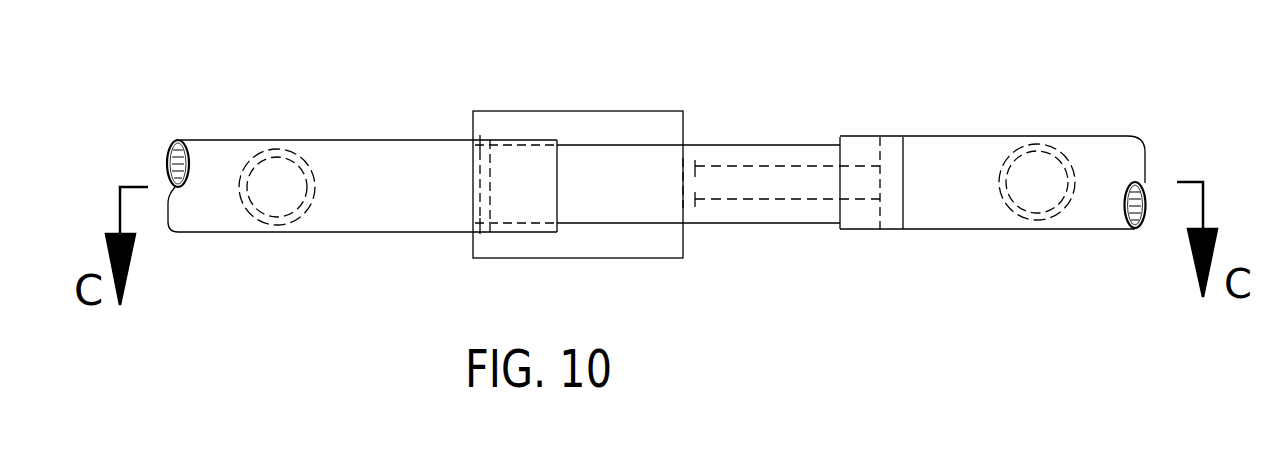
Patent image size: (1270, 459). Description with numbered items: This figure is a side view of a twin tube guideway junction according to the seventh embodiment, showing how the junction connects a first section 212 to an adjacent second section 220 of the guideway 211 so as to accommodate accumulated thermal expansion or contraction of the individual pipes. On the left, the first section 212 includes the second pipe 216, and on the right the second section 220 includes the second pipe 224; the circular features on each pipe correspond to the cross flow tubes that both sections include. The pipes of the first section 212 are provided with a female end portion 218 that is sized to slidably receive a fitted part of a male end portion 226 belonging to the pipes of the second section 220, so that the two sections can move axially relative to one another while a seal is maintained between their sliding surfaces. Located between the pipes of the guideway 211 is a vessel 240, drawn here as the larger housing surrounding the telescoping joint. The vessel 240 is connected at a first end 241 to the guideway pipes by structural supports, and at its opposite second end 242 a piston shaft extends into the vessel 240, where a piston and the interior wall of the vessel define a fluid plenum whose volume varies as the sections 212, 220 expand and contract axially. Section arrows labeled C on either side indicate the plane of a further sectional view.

The guideway 211 is at (117, 106).
The first section 212 is at (299, 99).
The second pipe 216 is at (223, 140).
The female end portion 218 is at (558, 167).
The second section 220 is at (1014, 105).
The second pipe 224 is at (1020, 229).
The male end portion 226 is at (602, 225).
The vessel 240 is at (545, 110).
The first end 241 is at (442, 113).
The second end 242 is at (711, 106).